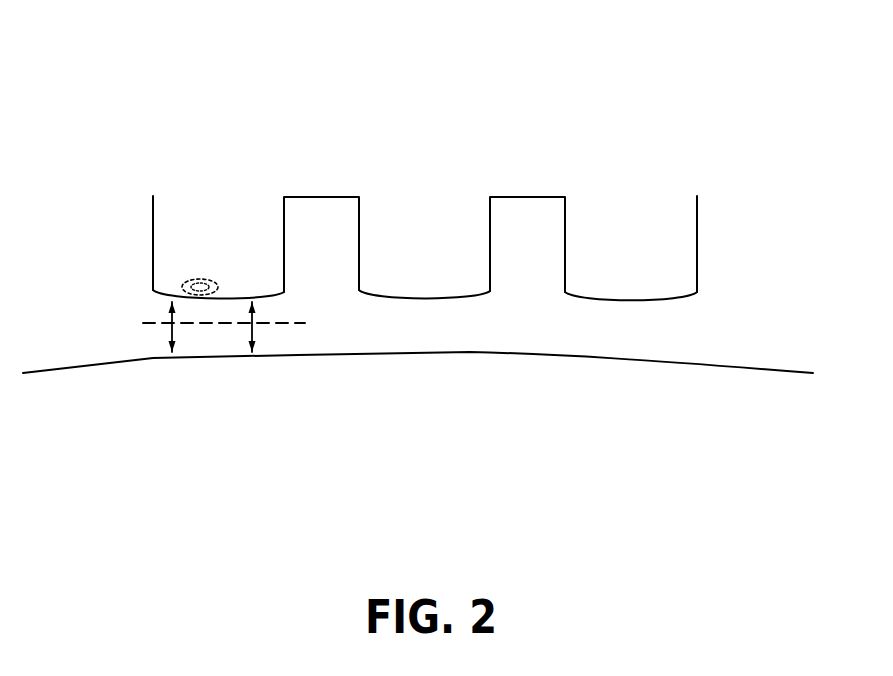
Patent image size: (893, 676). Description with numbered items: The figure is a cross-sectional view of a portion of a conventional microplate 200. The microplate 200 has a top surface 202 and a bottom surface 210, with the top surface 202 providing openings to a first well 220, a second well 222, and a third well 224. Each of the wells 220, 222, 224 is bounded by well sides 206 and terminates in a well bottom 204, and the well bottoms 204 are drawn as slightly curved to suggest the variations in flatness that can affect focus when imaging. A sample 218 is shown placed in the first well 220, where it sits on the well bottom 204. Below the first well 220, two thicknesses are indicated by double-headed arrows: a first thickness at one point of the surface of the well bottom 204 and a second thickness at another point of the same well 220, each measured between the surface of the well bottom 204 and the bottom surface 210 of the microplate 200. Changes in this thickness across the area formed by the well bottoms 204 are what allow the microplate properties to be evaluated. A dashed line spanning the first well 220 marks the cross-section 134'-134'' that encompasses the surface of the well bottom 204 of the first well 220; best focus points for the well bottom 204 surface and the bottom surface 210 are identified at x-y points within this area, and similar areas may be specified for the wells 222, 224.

The microplate 200 is at (435, 158).
The top surface 202 is at (313, 197).
The well bottom 204 is at (264, 296).
The well sides 206 is at (567, 218).
The bottom surface 210 is at (507, 355).
The sample 218 is at (186, 270).
The first well 220 is at (217, 203).
The second well 222 is at (419, 192).
The third well 224 is at (623, 192).
The cross-section line end 134' is at (222, 371).
The cross-section line end 134'' is at (317, 359).